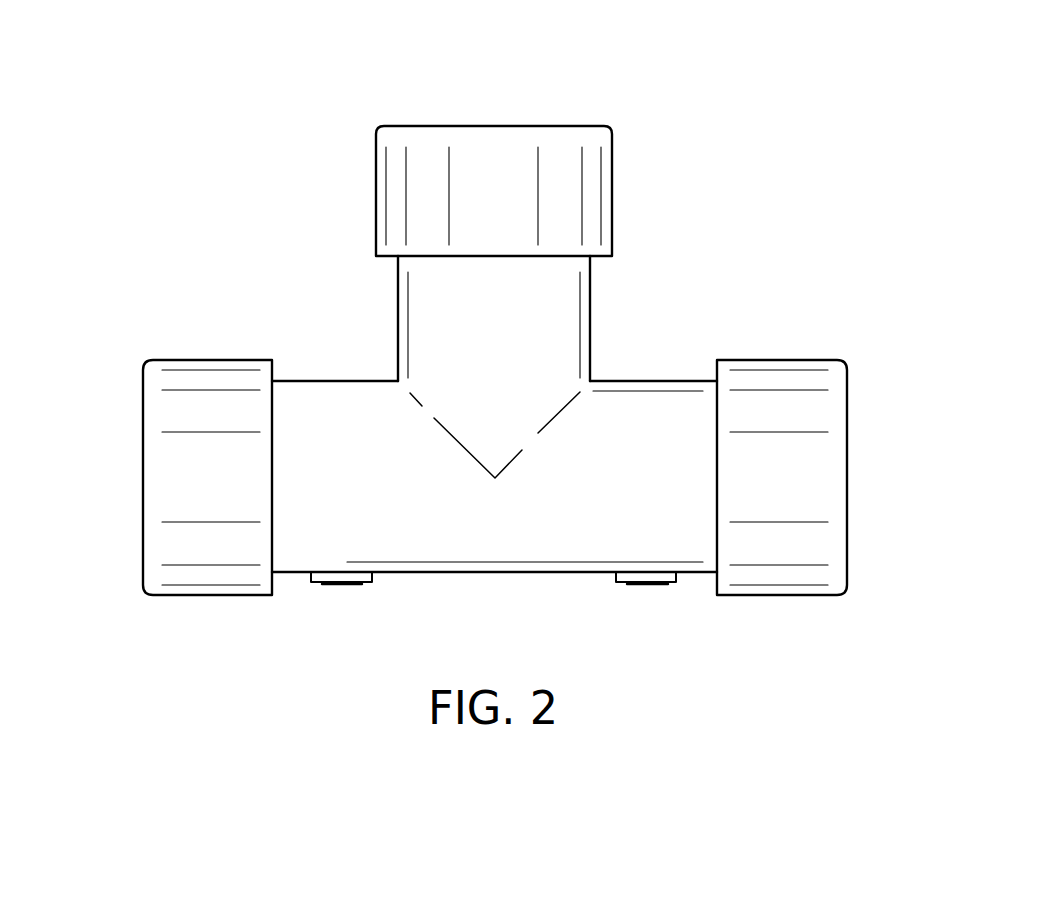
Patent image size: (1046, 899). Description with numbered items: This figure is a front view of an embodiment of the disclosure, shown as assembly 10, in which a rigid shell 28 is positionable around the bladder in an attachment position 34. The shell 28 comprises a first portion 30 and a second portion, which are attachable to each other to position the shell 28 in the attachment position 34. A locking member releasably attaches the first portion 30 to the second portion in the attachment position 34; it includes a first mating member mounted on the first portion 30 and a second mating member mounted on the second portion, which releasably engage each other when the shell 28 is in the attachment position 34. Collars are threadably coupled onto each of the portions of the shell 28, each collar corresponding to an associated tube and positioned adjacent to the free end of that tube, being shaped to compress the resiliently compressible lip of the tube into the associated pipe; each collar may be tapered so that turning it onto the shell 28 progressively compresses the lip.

The tee connector assembly 10 is at (350, 288).
The shell 28 is at (662, 344).
The first portion 30 is at (480, 526).
The attachment position 34 is at (720, 625).